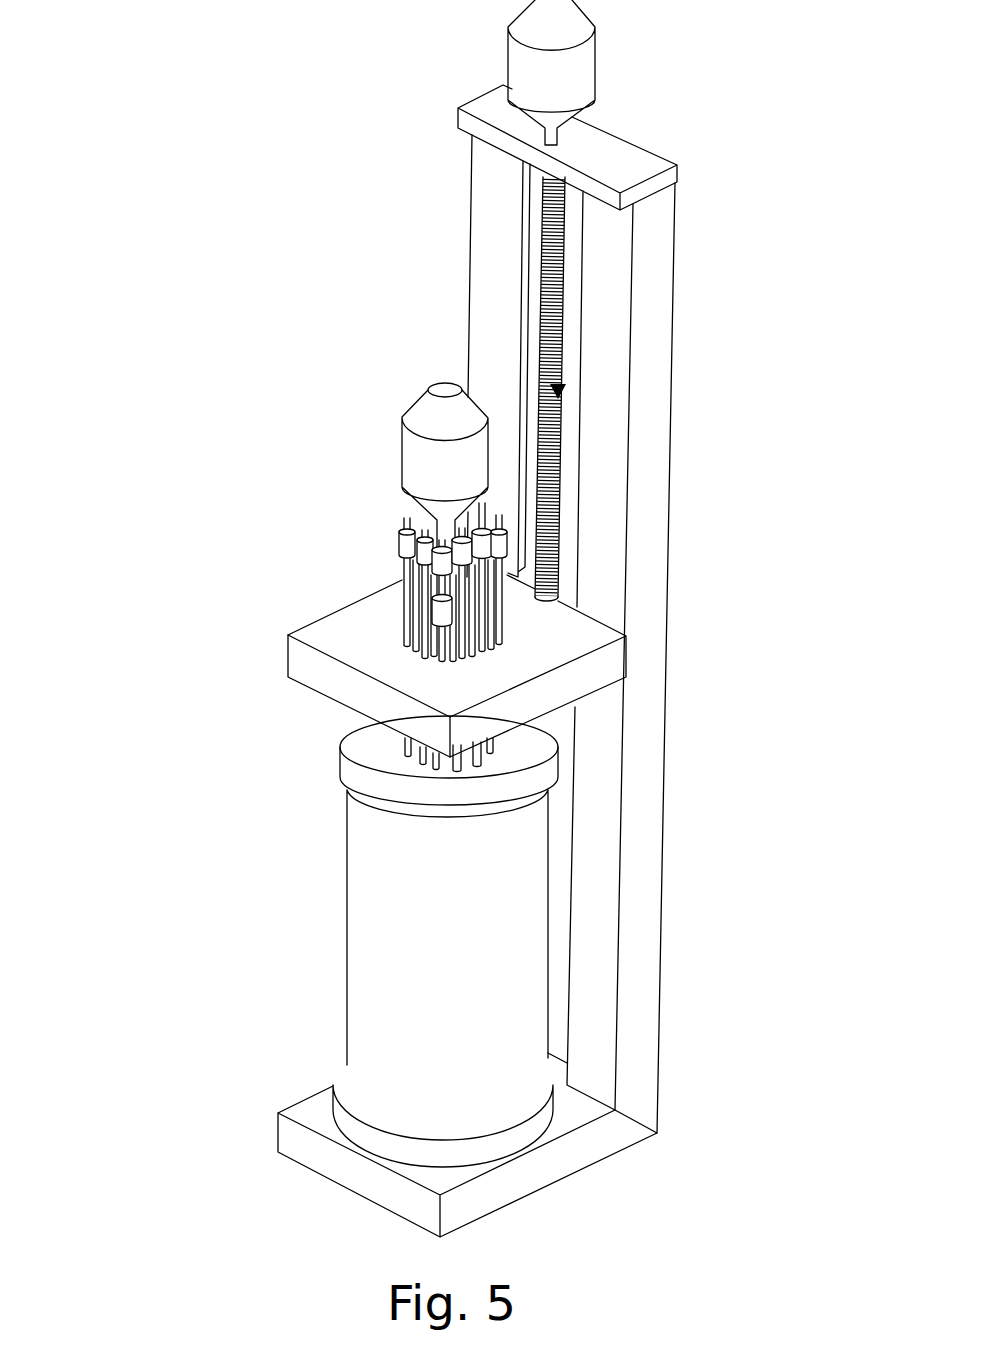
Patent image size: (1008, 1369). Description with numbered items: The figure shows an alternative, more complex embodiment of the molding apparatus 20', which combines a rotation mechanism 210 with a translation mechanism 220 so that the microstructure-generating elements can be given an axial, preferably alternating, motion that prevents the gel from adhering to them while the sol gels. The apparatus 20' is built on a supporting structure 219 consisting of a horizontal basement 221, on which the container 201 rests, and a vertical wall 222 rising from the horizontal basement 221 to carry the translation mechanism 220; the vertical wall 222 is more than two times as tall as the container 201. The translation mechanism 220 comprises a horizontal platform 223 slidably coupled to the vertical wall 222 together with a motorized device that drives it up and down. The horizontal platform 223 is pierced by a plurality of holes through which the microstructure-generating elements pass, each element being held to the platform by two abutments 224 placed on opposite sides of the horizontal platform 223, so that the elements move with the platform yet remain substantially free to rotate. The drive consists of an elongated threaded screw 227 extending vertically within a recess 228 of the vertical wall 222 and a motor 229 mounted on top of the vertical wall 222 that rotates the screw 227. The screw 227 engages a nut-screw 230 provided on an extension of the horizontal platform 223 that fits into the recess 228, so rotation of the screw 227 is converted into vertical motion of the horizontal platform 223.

The molding apparatus 20' is at (173, 94).
The container 201 is at (367, 980).
The rotation mechanism 210 is at (378, 551).
The supporting structure 219 is at (705, 888).
The translation mechanism 220 is at (271, 609).
The horizontal basement 221 is at (297, 1138).
The vertical wall 222 is at (650, 710).
The horizontal platform 223 is at (303, 663).
The abutments 224 is at (481, 303).
The threaded screw 227 is at (562, 270).
The recess 228 is at (562, 457).
The motor 229 is at (582, 60).
The nut-screw 230 is at (573, 575).